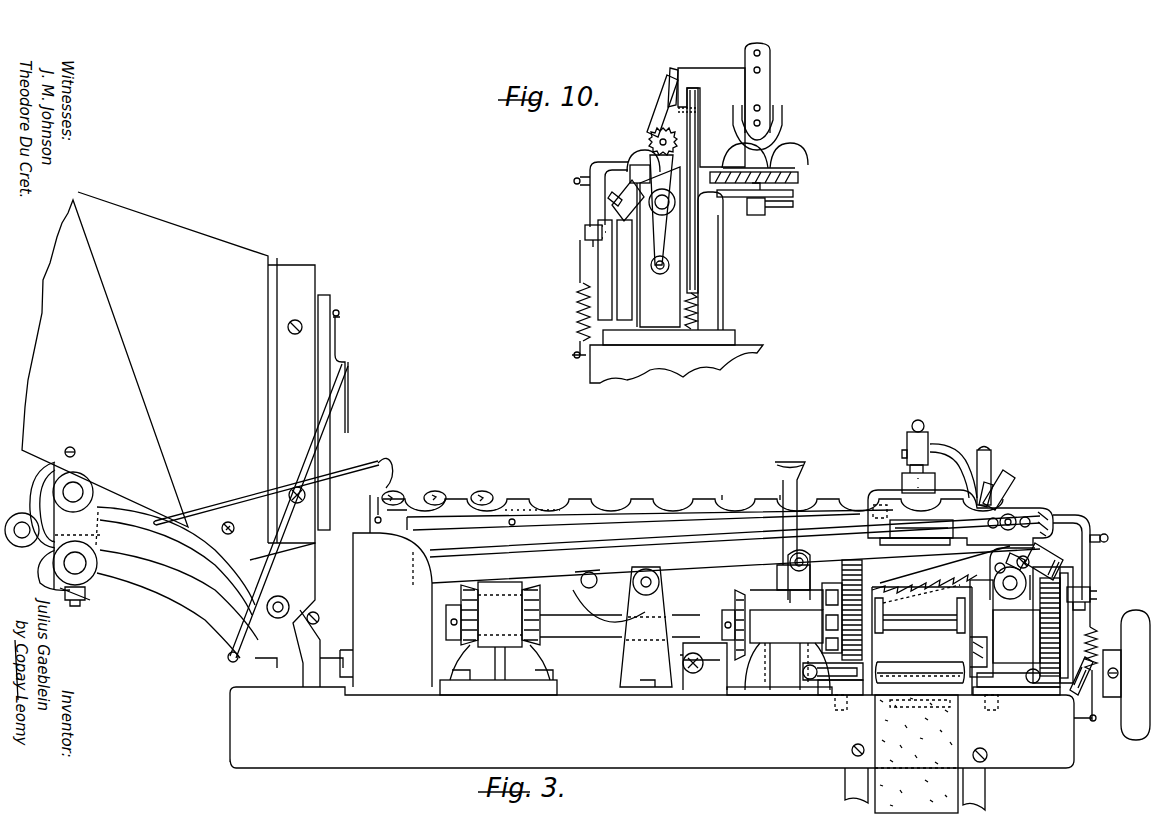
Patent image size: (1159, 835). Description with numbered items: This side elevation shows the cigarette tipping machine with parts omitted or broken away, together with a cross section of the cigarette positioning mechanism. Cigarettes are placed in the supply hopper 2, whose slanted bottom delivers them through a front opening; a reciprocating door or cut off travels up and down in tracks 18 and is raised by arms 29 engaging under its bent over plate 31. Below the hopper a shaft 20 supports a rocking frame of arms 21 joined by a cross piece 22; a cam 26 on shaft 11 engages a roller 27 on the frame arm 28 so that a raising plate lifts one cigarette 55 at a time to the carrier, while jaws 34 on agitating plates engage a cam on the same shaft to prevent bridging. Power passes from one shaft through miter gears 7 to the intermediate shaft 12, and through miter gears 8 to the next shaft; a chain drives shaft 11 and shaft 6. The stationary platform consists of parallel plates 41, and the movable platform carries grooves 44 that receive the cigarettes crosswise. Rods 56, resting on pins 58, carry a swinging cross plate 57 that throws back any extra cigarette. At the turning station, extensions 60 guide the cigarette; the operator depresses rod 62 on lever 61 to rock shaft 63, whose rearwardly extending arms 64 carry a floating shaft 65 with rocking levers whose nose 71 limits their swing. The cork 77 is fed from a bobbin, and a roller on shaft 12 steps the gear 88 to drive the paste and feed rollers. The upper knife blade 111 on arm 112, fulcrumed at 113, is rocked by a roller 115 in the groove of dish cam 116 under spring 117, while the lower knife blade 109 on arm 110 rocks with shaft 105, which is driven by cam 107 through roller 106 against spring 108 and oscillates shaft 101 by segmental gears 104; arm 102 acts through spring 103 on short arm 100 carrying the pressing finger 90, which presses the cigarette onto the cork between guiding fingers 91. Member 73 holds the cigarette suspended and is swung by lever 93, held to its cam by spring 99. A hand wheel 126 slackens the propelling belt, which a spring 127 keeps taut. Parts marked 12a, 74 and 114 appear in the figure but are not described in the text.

In FIG. 3, the supply hopper 2 is at (145, 367).
In FIG. 3, the shaft 6 is at (281, 598).
In FIG. 3, the miter gears 7 is at (740, 640).
In FIG. 3, the miter gears 8 is at (530, 647).
In FIG. 3, the shaft 11 is at (78, 490).
In FIG. 3, the intermediate shaft 12 is at (600, 634).
In FIG. 3, the bevel gear 12a is at (722, 632).
In FIG. 3, the tracks 18 is at (331, 447).
In FIG. 3, the shaft 20 is at (80, 560).
In FIG. 3, the arms 21 is at (160, 600).
In FIG. 3, the cross piece 22 is at (86, 592).
In FIG. 3, the cam 26 is at (55, 527).
In FIG. 3, the roller 27 is at (28, 514).
In FIG. 3, the arm 28 is at (52, 592).
In FIG. 3, the arms 29 is at (315, 440).
In FIG. 3, the bent over plate 31 is at (350, 393).
In FIG. 3, the jaws 34 is at (45, 482).
In FIG. 3, the parallel plates 41 is at (600, 506).
In FIG. 3, the grooves 44 is at (540, 504).
In FIG. 3, the cigarette 55 is at (485, 490).
In FIG. 3, the rods 56 is at (250, 503).
In FIG. 3, the cross plate 57 is at (392, 470).
In FIG. 3, the pins 58 is at (298, 505).
In FIG. 3, the extensions 60 is at (782, 498).
In FIG. 3, the lever 61 is at (728, 578).
In FIG. 3, the rod 62 is at (806, 464).
In FIG. 3, the shaft 63 is at (646, 590).
In FIG. 3, the rearwardly extending arms 64 is at (622, 578).
In FIG. 3, the floating shaft 65 is at (590, 590).
In FIG. 3, the nose 71 is at (612, 610).
In FIG. 10, the member 73 is at (782, 125).
In FIG. 3, the member 73 is at (905, 483).
In FIG. 10, the arm 74 is at (771, 97).
In FIG. 3, the arm 74 is at (923, 428).
In FIG. 3, the cork 77 is at (875, 722).
In FIG. 3, the gear 88 is at (823, 622).
In FIG. 3, the pressing finger 90 is at (938, 446).
In FIG. 10, the guiding fingers 91 is at (762, 153).
In FIG. 10, the lever 93 is at (690, 260).
In FIG. 10, the spring 99 is at (692, 310).
In FIG. 3, the short arm 100 is at (990, 478).
In FIG. 10, the shaft 101 is at (651, 142).
In FIG. 10, the arm 102 is at (663, 95).
In FIG. 3, the arm 102 is at (1012, 478).
In FIG. 10, the spring 103 is at (674, 82).
In FIG. 3, the spring 103 is at (997, 492).
In FIG. 10, the segmental gears 104 is at (630, 163).
In FIG. 10, the shaft 105 is at (672, 207).
In FIG. 3, the shaft 105 is at (1008, 600).
In FIG. 10, the roller 106 is at (617, 212).
In FIG. 3, the roller 106 is at (1066, 567).
In FIG. 10, the cam 107 is at (625, 268).
In FIG. 3, the cam 107 is at (1050, 613).
In FIG. 10, the spring 108 is at (659, 274).
In FIG. 3, the lower knife blade 109 is at (940, 548).
In FIG. 3, the arm 110 is at (946, 574).
In FIG. 3, the upper knife blade 111 is at (898, 515).
In FIG. 10, the arm 112 is at (577, 182).
In FIG. 3, the arm 112 is at (1060, 525).
In FIG. 3, the fulcrum 113 is at (1012, 520).
In FIG. 3, the bolt 114 is at (1090, 557).
In FIG. 10, the roller 115 is at (593, 236).
In FIG. 3, the roller 115 is at (1095, 592).
In FIG. 10, the dish cam 116 is at (598, 255).
In FIG. 3, the dish cam 116 is at (1065, 640).
In FIG. 10, the spring 117 is at (578, 318).
In FIG. 3, the spring 117 is at (1100, 645).
In FIG. 3, the hand wheel 126 is at (1130, 728).
In FIG. 3, the spring 127 is at (1075, 692).